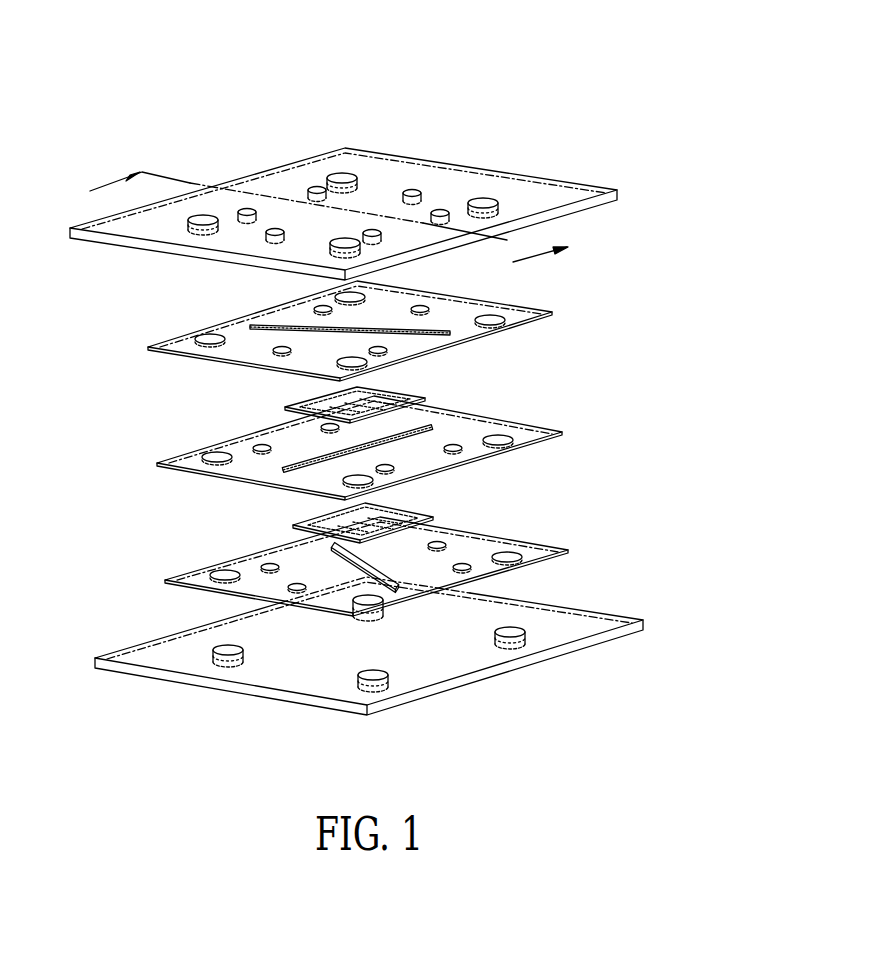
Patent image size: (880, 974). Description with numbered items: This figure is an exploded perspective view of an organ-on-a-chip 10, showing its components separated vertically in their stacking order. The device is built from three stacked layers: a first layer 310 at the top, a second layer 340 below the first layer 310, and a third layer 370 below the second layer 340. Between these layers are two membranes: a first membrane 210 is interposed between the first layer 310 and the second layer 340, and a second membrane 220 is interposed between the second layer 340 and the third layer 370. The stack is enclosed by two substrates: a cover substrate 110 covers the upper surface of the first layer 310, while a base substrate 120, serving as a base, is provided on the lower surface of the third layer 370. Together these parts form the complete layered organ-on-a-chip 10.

The organ-on-a-chip 10 is at (572, 84).
The cover substrate 110 is at (617, 192).
The first layer 310 is at (552, 312).
The first membrane 210 is at (405, 393).
The second layer 340 is at (562, 432).
The second membrane 220 is at (420, 512).
The third layer 370 is at (568, 550).
The base substrate 120 is at (643, 622).